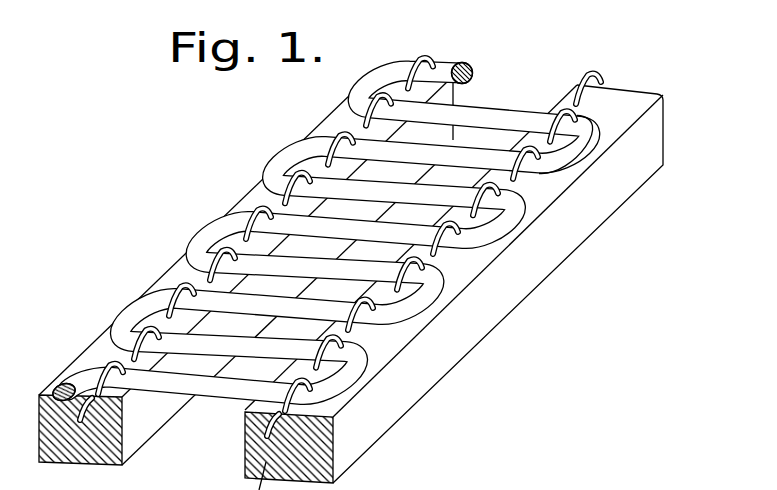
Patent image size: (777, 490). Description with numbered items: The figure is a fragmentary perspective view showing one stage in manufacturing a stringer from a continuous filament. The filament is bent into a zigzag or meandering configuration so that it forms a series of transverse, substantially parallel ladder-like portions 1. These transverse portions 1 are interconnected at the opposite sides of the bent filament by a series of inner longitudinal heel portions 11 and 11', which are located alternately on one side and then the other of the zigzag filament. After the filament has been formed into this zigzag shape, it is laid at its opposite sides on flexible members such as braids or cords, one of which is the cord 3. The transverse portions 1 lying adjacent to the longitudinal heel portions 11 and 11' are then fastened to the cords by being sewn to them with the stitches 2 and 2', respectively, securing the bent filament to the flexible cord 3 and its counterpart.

The transverse ladder-like portions 1 is at (216, 394).
The stitches 2 is at (270, 219).
The stitches 2' is at (441, 235).
The cord 3 is at (127, 450).
The inner longitudinal heel portions 11 is at (319, 211).
The inner longitudinal heel portions 11' is at (632, 143).